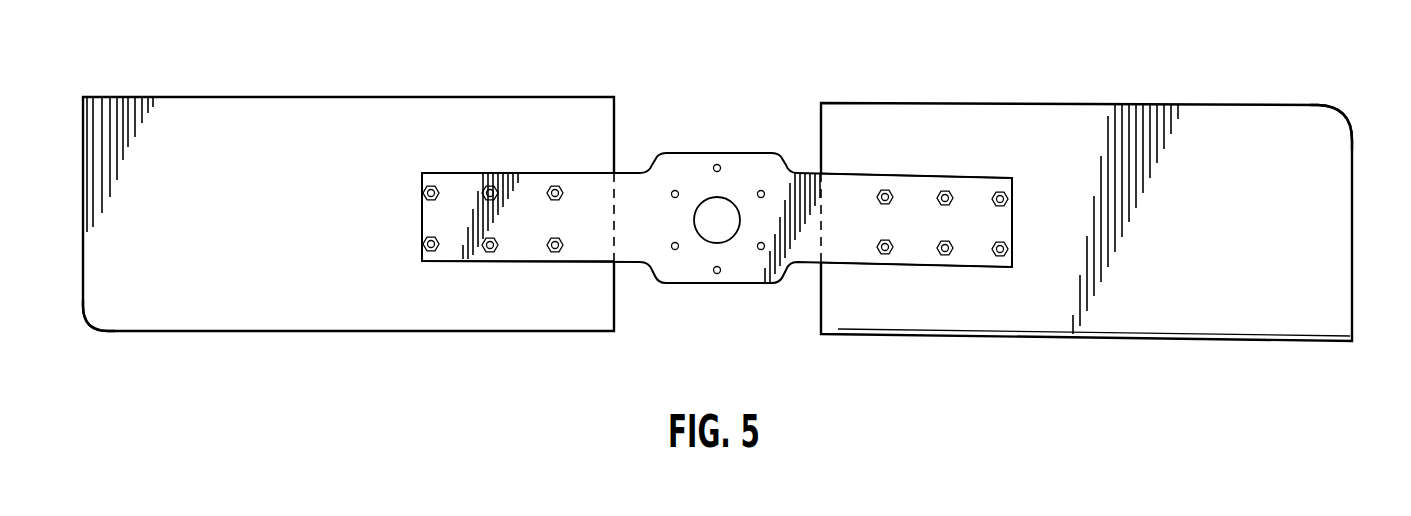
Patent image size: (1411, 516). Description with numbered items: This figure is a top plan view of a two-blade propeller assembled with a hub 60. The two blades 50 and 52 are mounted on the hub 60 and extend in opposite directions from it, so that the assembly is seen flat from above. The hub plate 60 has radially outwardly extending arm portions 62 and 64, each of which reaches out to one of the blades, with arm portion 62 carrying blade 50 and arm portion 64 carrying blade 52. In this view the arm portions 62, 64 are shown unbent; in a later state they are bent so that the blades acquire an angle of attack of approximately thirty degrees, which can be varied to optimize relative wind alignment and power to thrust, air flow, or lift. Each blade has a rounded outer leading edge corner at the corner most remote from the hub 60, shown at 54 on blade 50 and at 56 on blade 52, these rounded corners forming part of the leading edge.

The blade 50 is at (343, 108).
The blade 52 is at (1075, 118).
The rounded outer leading edge corner 54 is at (92, 325).
The rounded outer leading edge corner 56 is at (1345, 120).
The hub 60 is at (768, 286).
The radially outwardly extending arm portion 62 is at (589, 186).
The radially outwardly extending arm portion 64 is at (978, 188).